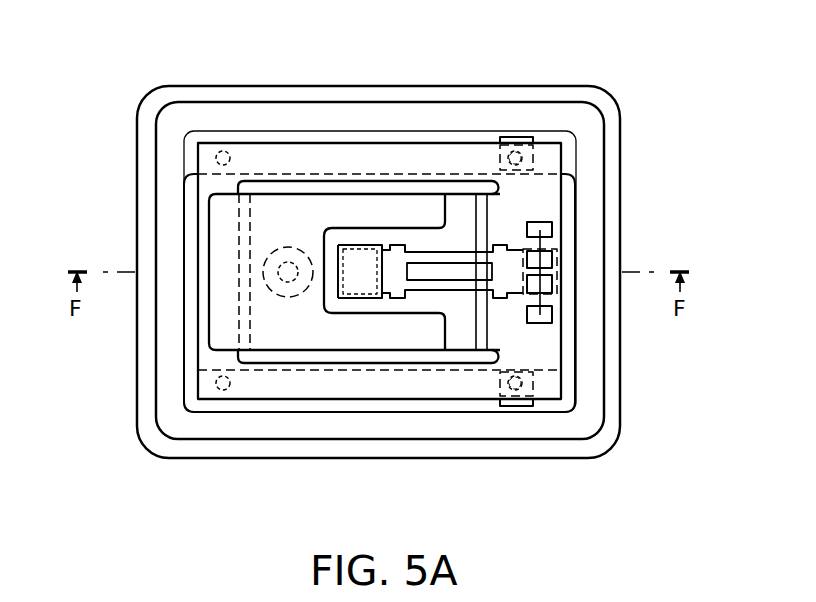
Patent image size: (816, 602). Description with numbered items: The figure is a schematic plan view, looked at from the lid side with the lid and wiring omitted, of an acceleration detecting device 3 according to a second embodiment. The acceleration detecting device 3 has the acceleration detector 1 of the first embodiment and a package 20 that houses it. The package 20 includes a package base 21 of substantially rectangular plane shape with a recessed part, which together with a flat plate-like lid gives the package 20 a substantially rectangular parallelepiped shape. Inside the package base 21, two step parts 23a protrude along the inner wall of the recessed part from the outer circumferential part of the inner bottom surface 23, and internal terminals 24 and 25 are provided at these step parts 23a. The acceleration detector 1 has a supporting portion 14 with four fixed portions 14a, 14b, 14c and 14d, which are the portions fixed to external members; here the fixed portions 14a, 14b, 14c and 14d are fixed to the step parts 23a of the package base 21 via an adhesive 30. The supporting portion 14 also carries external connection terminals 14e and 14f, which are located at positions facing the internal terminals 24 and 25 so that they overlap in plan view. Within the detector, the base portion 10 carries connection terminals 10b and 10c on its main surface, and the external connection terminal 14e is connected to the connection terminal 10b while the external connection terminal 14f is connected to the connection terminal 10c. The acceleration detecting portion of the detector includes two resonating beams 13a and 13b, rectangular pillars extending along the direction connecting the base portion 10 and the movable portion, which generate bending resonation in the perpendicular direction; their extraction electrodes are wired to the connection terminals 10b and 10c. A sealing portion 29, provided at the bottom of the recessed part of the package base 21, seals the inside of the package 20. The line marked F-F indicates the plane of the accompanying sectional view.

The acceleration detector 1 is at (344, 136).
The acceleration detecting device 3 is at (600, 54).
The base portion 10 is at (553, 335).
The connection terminal 10b is at (552, 228).
The connection terminal 10c is at (550, 312).
The resonating beam 13a is at (465, 250).
The resonating beam 13b is at (463, 292).
The supporting portion 14 is at (333, 386).
The fixed portion 14a is at (226, 151).
The fixed portion 14b is at (518, 150).
The fixed portion 14c is at (515, 390).
The fixed portion 14d is at (223, 390).
The external connection terminal 14e is at (522, 160).
The external connection terminal 14f is at (535, 385).
The package 20 is at (630, 130).
The package base 21 is at (620, 407).
The inner bottom surface 23 is at (567, 352).
The step part 23a is at (413, 137).
The internal terminal 24 is at (528, 136).
The internal terminal 25 is at (523, 406).
The sealing portion 29 is at (292, 262).
The adhesive 30 is at (483, 160).